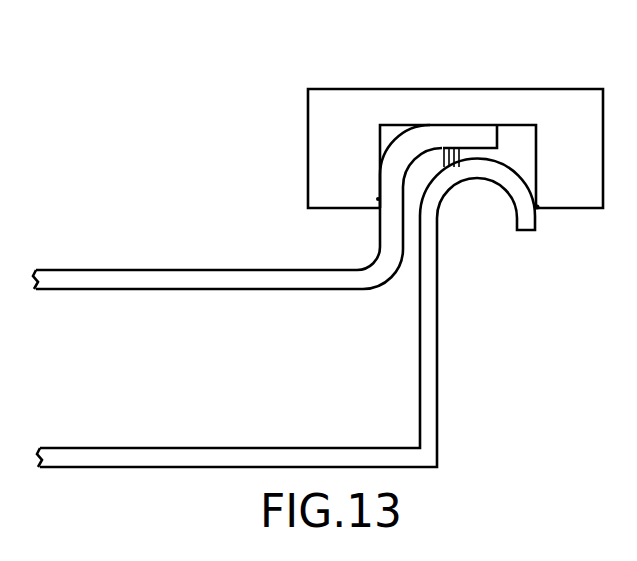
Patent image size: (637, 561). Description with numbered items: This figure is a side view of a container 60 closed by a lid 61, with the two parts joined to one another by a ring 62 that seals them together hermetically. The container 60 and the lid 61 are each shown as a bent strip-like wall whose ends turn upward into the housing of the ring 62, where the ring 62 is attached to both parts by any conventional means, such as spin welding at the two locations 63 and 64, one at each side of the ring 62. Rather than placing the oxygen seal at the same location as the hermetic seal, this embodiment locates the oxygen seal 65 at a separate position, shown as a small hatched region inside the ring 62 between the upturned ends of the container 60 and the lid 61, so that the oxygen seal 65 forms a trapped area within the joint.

The container 60 is at (438, 405).
The lid 61 is at (192, 269).
The ring 62 is at (450, 88).
The spin weld 63 is at (378, 198).
The spin weld 64 is at (537, 208).
The oxygen seal 65 is at (453, 166).